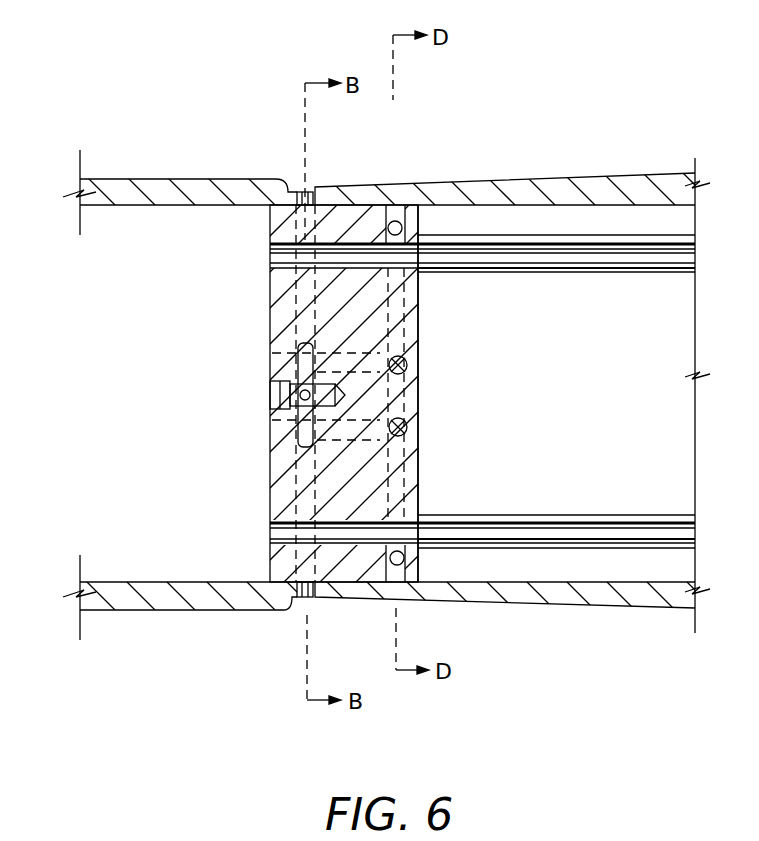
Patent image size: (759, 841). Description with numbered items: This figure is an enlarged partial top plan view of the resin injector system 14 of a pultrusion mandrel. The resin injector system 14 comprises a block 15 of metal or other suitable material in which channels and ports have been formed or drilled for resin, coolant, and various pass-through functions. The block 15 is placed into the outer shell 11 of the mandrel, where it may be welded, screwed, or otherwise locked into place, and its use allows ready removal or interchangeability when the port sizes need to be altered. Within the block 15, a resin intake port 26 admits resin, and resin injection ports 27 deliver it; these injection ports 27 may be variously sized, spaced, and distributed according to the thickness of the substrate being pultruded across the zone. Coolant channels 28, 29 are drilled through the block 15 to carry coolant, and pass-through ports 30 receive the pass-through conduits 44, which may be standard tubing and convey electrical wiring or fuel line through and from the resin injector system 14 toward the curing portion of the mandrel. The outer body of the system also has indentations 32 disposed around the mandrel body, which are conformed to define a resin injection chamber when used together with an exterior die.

The outer shell 11 is at (635, 608).
The resin injector system 14 is at (420, 712).
The block 15 is at (420, 330).
The resin intake port 26 is at (258, 397).
The resin injection port 27 is at (305, 180).
The coolant channel 28 is at (403, 228).
The coolant channel 29 is at (406, 560).
The pass-through port 30 is at (258, 257).
The indentation 32 is at (357, 167).
The pass-through conduit 44 is at (576, 273).